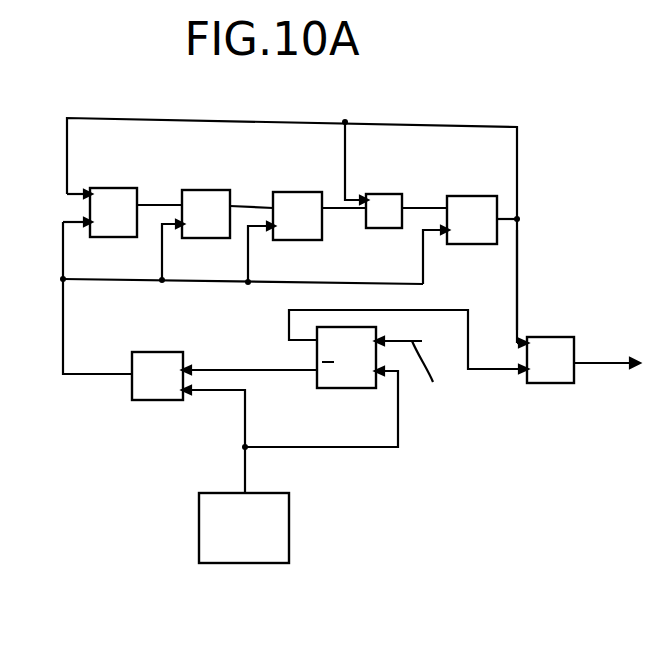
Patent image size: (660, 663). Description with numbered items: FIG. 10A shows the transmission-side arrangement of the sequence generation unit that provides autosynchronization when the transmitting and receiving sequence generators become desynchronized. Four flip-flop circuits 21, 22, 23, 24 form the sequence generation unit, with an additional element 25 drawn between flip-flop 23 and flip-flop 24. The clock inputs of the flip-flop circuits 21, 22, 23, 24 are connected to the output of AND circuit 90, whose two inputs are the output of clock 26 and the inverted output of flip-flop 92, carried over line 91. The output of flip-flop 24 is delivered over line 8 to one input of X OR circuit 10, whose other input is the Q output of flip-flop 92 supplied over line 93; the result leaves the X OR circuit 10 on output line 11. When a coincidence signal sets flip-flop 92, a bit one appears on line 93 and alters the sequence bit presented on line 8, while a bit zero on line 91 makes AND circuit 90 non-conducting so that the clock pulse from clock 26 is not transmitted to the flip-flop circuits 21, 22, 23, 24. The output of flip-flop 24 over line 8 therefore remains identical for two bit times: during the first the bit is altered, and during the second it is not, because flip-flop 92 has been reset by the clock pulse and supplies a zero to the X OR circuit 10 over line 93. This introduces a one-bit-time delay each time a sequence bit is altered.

The flip-flop circuit 21 is at (128, 188).
The flip-flop circuit 22 is at (218, 190).
The flip-flop circuit 23 is at (310, 192).
The flip-flop circuit 24 is at (480, 196).
The delay element 25 is at (387, 194).
The line 8 is at (517, 280).
The line (Q) 93 is at (443, 310).
The line 91 is at (273, 370).
The flip-flop 92 is at (343, 388).
The AND circuit 90 is at (132, 398).
The clock 26 is at (199, 522).
The X OR circuit 10 is at (545, 385).
The output signal line 11 is at (593, 365).